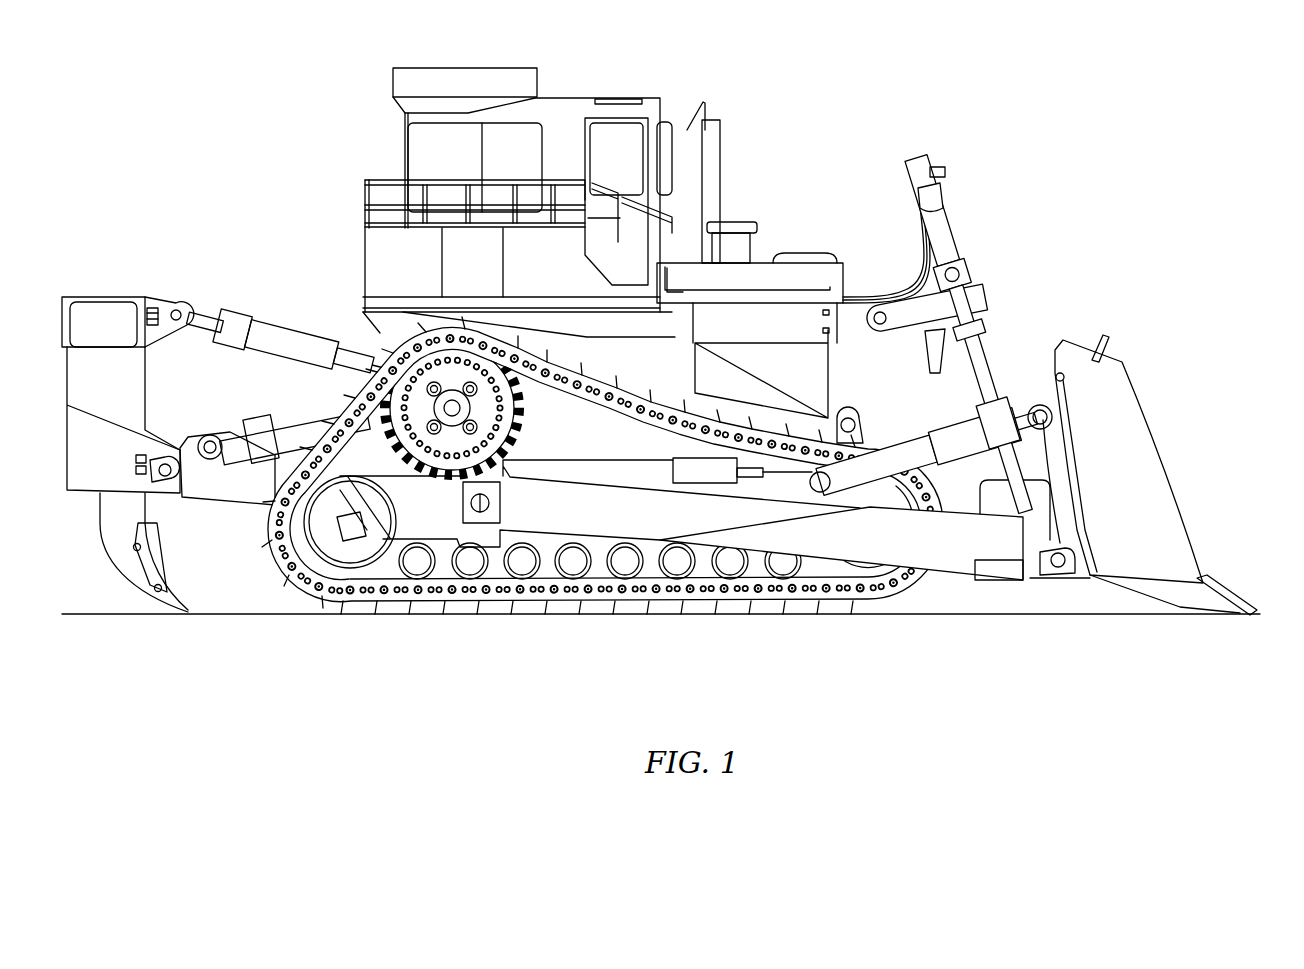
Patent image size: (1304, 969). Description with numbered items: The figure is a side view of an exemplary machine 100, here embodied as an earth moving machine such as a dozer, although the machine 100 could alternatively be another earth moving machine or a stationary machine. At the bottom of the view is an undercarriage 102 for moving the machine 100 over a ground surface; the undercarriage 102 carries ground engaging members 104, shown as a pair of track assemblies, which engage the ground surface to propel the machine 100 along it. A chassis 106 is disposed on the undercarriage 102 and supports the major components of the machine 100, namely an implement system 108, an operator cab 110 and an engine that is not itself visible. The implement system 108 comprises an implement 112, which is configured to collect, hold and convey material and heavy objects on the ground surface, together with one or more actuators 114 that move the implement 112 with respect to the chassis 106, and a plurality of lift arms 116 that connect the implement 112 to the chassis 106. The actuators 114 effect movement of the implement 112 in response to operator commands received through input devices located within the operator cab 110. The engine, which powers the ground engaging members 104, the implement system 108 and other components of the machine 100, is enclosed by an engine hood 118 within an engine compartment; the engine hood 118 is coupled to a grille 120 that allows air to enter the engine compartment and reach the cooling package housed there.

The machine 100 is at (661, 360).
The undercarriage 102 is at (253, 555).
The ground engaging members 104 is at (650, 615).
The chassis 106 is at (380, 333).
The implement system 108 is at (1118, 475).
The operator cab 110 is at (580, 125).
The implement 112 is at (1140, 520).
The actuators 114 is at (967, 240).
The lift arms 116 is at (953, 555).
The engine hood 118 is at (784, 275).
The grille 120 is at (998, 345).